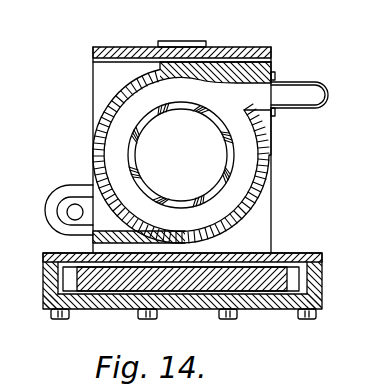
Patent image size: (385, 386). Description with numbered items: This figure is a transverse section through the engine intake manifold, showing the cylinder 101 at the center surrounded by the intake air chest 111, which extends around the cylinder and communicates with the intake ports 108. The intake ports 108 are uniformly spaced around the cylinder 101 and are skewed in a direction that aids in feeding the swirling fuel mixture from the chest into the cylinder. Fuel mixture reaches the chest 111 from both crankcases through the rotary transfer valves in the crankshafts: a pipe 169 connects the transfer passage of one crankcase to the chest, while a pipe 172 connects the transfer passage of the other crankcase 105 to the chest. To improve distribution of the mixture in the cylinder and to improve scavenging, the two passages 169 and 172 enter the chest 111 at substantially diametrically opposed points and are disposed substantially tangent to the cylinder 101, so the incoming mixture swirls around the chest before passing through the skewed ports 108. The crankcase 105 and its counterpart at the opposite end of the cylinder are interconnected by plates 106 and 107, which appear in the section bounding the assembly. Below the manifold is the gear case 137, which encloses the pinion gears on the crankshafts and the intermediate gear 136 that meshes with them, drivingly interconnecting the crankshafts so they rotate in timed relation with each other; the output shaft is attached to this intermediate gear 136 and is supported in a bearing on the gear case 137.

The cylinder 101 is at (137, 178).
The crankcase 105 is at (105, 72).
The plate 106 is at (248, 47).
The plate 107 is at (285, 254).
The intake ports 108 is at (135, 118).
The intake air chest 111 is at (163, 85).
The intermediate gear 136 is at (112, 280).
The gear case 137 is at (169, 272).
The pipe 169 is at (292, 96).
The pipe 172 is at (72, 210).